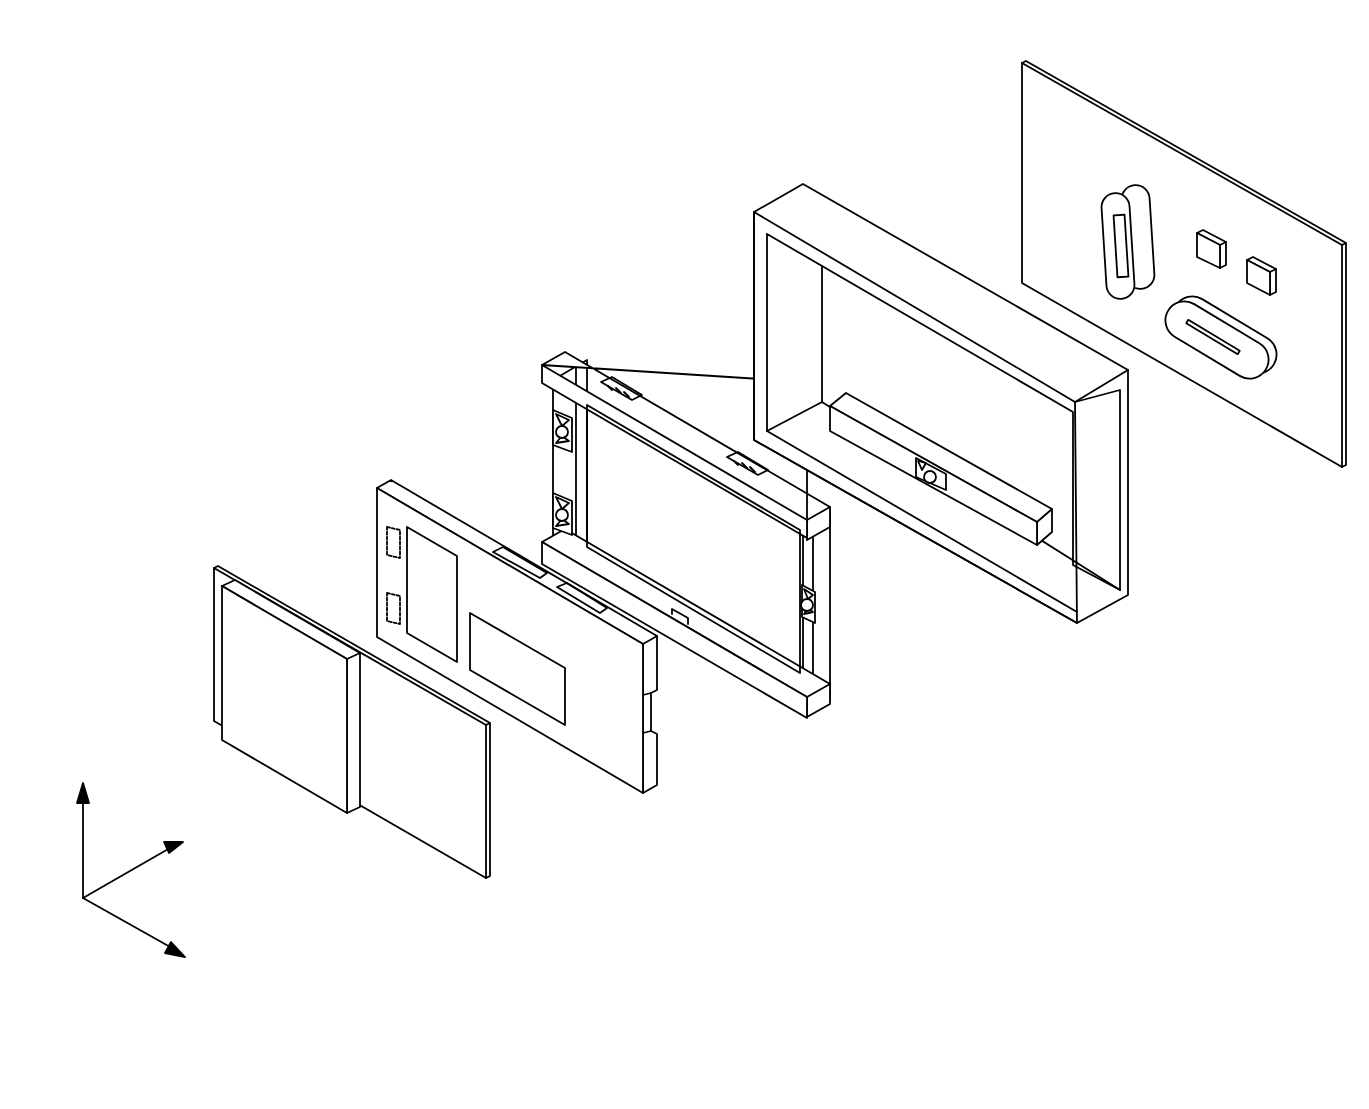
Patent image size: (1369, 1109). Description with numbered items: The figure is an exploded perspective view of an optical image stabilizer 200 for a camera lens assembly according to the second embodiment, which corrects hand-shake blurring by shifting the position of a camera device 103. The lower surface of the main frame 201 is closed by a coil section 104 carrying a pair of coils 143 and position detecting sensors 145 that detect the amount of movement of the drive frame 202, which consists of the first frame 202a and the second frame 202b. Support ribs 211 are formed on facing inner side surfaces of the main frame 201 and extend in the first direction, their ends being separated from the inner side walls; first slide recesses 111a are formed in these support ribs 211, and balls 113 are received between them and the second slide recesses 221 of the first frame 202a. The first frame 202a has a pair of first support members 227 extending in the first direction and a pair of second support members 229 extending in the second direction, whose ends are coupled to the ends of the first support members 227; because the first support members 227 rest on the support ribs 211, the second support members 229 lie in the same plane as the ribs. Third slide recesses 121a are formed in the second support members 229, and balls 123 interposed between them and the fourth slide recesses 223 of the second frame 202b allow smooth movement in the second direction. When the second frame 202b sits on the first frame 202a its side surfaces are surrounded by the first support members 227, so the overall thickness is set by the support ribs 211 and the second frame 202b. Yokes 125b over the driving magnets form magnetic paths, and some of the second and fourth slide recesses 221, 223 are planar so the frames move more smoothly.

The optical image stabilizer 200 is at (437, 162).
The camera device 103 is at (291, 815).
The coil section 104 is at (1129, 264).
The coils 143 is at (1104, 242).
The position detecting sensors 145 is at (1207, 231).
The main frame 201 is at (886, 430).
The support ribs 211 is at (1030, 537).
The first slide recesses 111a is at (940, 492).
The balls 113 is at (925, 485).
The drive frame 202 is at (678, 606).
The first frame 202a is at (716, 549).
The second frame 202b is at (567, 656).
The second slide recesses 221 is at (684, 607).
The fourth slide recesses 223 is at (660, 722).
The first support members 227 is at (657, 440).
The second support members 229 is at (567, 470).
The third slide recesses 121a is at (553, 413).
The balls 123 is at (554, 433).
The yokes 125b is at (418, 552).